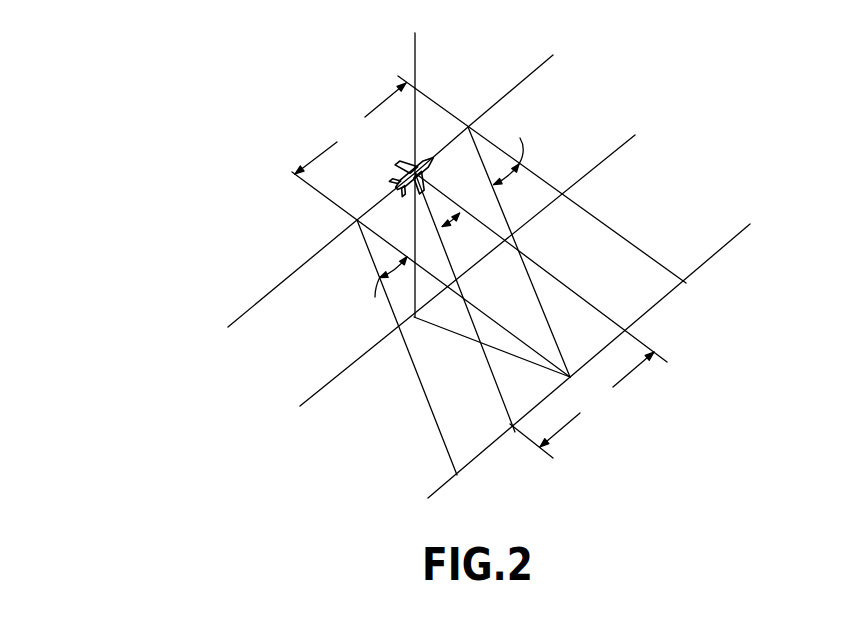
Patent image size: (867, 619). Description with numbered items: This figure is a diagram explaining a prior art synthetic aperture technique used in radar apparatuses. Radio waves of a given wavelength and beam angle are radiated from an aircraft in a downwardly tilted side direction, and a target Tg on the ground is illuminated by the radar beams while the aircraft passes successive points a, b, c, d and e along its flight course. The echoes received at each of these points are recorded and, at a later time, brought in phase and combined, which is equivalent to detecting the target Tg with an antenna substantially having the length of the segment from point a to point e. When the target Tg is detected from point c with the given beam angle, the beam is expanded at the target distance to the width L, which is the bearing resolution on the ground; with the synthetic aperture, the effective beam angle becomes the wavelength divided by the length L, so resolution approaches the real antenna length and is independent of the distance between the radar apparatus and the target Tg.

The point a on the flight course a is at (292, 260).
The point b on the flight course b is at (386, 196).
The point c on the flight course c is at (415, 172).
The point d on the flight course d is at (441, 150).
The point e on the flight course e is at (507, 91).
The target Tg is at (504, 252).
The expanded beam width L is at (474, 265).